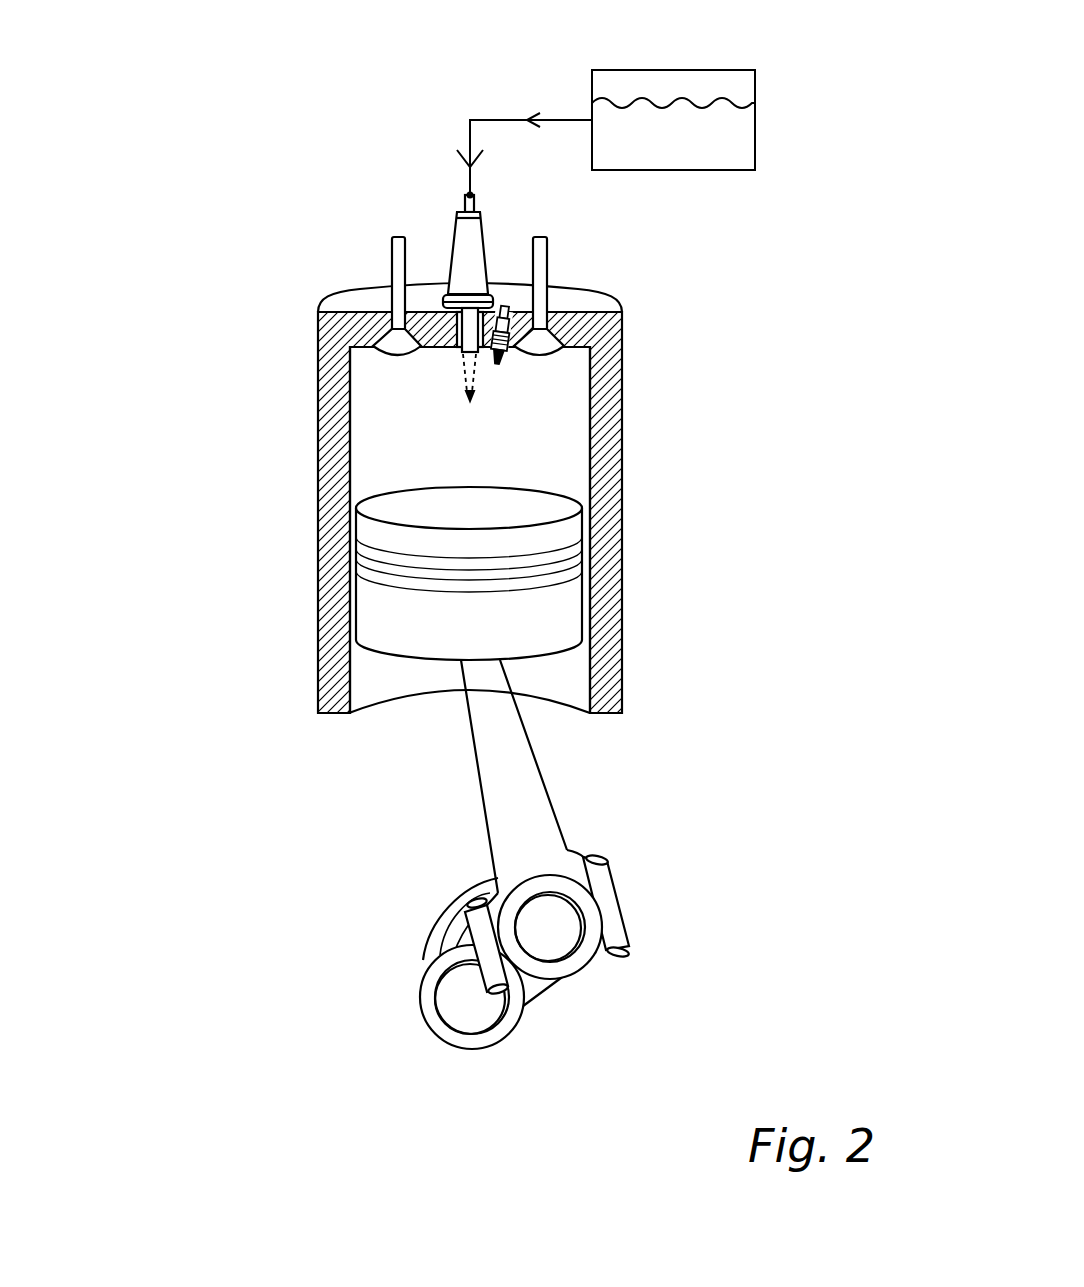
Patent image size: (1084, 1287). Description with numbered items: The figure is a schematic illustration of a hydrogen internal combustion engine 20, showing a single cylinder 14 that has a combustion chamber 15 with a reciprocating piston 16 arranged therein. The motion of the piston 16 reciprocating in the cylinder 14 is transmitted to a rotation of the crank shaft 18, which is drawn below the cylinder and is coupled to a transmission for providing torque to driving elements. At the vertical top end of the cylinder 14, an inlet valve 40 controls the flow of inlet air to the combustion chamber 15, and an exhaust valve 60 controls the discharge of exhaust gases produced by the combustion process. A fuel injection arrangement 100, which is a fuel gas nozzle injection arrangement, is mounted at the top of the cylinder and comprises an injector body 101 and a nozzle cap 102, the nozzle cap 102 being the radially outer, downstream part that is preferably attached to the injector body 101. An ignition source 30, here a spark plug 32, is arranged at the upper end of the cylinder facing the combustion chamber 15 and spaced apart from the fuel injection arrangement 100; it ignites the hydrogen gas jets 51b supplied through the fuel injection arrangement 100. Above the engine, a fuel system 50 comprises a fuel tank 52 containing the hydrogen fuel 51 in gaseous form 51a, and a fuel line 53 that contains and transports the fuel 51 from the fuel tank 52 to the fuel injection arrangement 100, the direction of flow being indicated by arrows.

The hydrogen internal combustion engine 20 is at (210, 298).
The cylinder 14 is at (332, 640).
The combustion chamber 15 is at (402, 430).
The piston 16 is at (392, 620).
The crank shaft 18 is at (402, 1013).
The inlet valve 40 is at (396, 274).
The exhaust valve 60 is at (541, 277).
The ignition source 30 is at (507, 306).
The spark plug 32 is at (501, 335).
The fuel injection arrangement 100 is at (440, 200).
The injector body 101 is at (463, 252).
The nozzle cap 102 is at (470, 342).
The fuel system 50 is at (455, 83).
The fuel 51 is at (679, 332).
The gaseous hydrogen 51a is at (738, 125).
The hydrogen gas jets 51b is at (480, 407).
The fuel tank 52 is at (673, 85).
The fuel line 53 is at (491, 118).